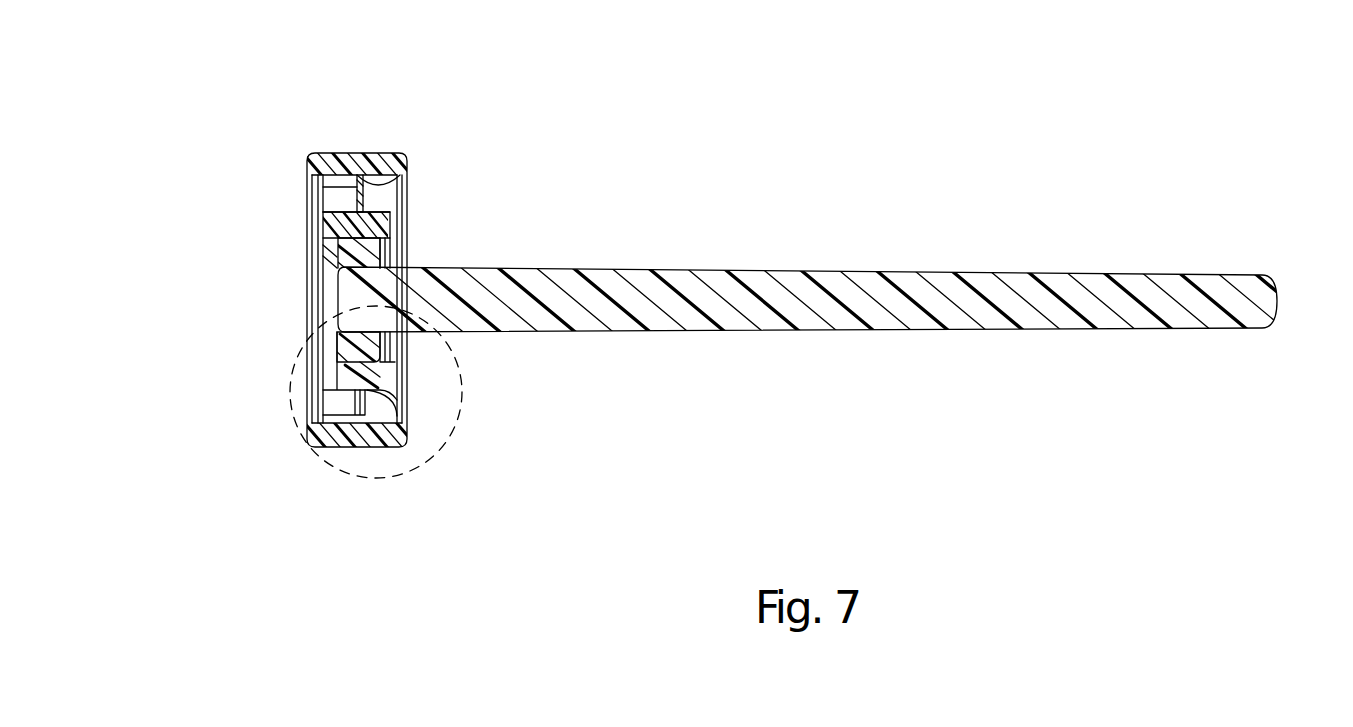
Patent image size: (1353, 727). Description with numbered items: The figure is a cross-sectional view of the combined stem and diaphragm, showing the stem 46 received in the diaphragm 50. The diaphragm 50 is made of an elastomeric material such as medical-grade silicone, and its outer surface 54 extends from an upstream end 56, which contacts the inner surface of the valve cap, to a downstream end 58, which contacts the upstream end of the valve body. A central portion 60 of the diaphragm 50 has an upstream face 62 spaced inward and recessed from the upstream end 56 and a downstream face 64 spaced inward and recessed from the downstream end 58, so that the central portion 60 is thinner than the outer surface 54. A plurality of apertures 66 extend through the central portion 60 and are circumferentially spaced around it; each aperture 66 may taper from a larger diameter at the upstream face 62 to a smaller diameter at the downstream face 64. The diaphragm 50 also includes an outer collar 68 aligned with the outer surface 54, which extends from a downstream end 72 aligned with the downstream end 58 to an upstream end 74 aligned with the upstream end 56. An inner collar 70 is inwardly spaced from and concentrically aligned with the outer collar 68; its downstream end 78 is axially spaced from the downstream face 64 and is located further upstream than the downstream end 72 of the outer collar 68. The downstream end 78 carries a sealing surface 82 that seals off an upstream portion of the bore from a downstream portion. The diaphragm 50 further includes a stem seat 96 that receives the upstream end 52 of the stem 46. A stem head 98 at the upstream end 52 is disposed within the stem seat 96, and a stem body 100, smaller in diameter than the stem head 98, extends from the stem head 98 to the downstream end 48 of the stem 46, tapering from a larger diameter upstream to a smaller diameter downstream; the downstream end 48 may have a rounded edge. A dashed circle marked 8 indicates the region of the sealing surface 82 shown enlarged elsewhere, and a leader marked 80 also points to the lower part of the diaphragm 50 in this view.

The detail region 8 is at (462, 420).
The stem 46 is at (745, 315).
The downstream end of the stem 48 is at (1282, 312).
The diaphragm 50 is at (325, 155).
The upstream end of the stem 52 is at (395, 253).
The outer surface of the diaphragm 54 is at (350, 153).
The upstream end of the diaphragm 56 is at (305, 165).
The downstream end of the diaphragm 58 is at (408, 160).
The central portion of the diaphragm 60 is at (310, 307).
The upstream face 62 is at (307, 235).
The downstream face 64 is at (408, 180).
The apertures 66 is at (345, 202).
The outer collar 68 is at (383, 153).
The inner collar 70 is at (370, 443).
The downstream end of the outer collar 72 is at (410, 430).
The upstream end of the outer collar 74 is at (310, 437).
The downstream end of the inner collar 78 is at (387, 363).
The lower support 80 is at (320, 373).
The sealing surface 82 is at (403, 417).
The stem seat 96 is at (317, 277).
The stem head 98 is at (437, 265).
The stem body 100 is at (905, 292).